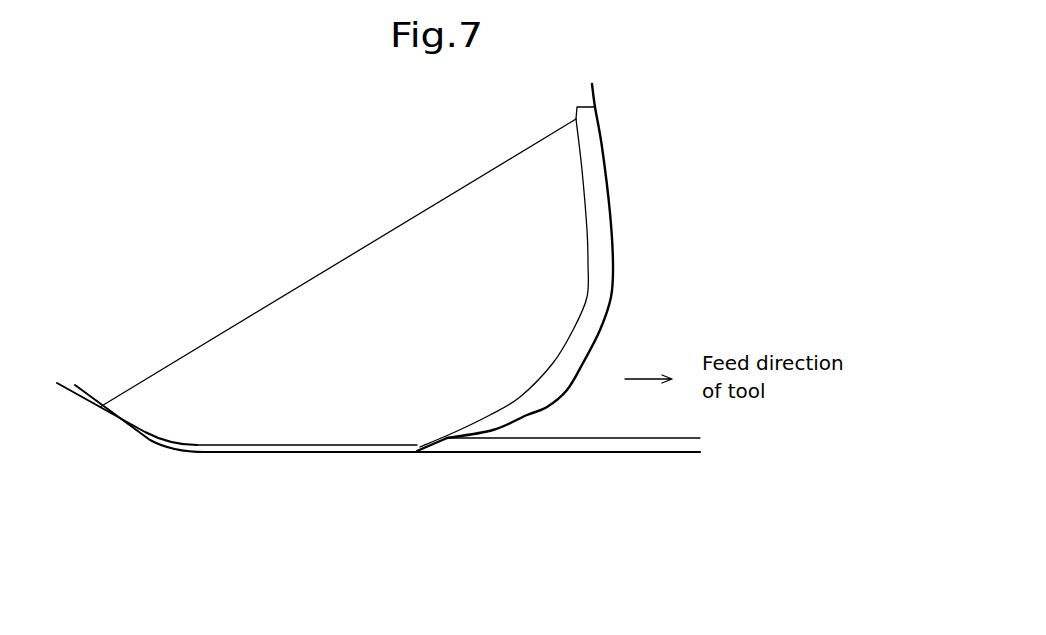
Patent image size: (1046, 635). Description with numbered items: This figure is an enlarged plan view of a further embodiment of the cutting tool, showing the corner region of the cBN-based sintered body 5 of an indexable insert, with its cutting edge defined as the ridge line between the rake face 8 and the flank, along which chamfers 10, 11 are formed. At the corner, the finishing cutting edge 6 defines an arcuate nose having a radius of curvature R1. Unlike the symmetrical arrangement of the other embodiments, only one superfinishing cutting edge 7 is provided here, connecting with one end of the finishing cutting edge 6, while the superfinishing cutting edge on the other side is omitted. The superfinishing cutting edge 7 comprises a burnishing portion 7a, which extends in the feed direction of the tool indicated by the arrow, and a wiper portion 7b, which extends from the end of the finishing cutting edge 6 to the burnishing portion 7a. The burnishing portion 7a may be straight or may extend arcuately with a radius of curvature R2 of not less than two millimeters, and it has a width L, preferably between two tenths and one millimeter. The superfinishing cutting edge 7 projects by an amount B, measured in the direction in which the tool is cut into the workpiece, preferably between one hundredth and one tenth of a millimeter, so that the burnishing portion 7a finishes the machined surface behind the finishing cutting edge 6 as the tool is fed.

The cBN-based sintered body 5 is at (171, 427).
The finishing cutting edge 6 is at (547, 407).
The superfinishing cutting edge 7 is at (473, 533).
The burnishing portion 7a is at (325, 452).
The wiper portion 7b is at (428, 452).
The rake face 8 is at (560, 237).
The chamfer 10 is at (588, 317).
The chamfer 11 is at (289, 447).
The radius of curvature of the nose R1 is at (559, 381).
The radius of curvature of the burnishing portion R2 is at (421, 436).
The width of the burnishing portion L is at (382, 483).
The amount of projection B is at (687, 408).